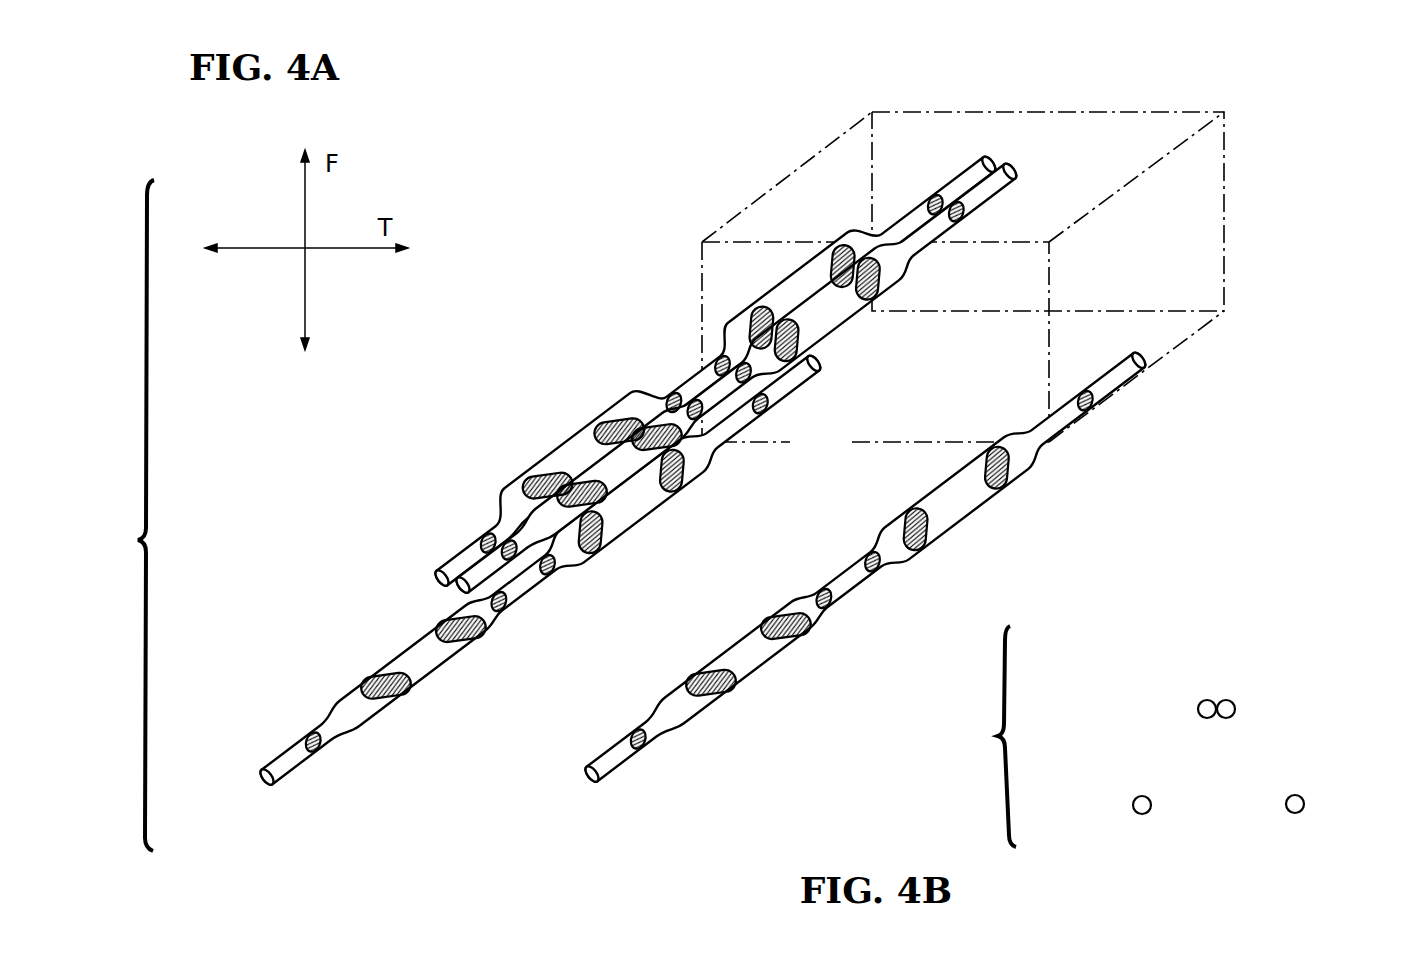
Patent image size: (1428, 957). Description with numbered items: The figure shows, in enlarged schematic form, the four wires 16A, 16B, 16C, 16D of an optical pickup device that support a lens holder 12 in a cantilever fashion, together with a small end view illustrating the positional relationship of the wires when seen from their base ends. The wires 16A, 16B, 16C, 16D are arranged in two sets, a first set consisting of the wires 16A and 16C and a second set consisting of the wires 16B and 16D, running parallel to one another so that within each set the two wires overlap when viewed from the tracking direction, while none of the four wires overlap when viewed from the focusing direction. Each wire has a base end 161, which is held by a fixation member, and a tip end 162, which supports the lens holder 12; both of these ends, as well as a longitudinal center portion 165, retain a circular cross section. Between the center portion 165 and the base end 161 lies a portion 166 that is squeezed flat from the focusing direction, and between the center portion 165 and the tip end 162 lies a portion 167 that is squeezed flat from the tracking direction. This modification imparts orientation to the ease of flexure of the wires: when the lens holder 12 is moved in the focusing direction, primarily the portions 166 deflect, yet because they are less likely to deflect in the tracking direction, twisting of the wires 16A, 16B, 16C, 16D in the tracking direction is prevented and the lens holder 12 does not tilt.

In FIG. 4A, the lens holder 12 is at (1230, 186).
In FIG. 4A, the wire 16A is at (702, 369).
In FIG. 4B, the wire 16A is at (1203, 701).
In FIG. 4A, the wire 16B is at (404, 666).
In FIG. 4B, the wire 16B is at (1134, 797).
In FIG. 4A, the wire 16C is at (818, 328).
In FIG. 4B, the wire 16C is at (1237, 699).
In FIG. 4A, the wire 16D is at (749, 626).
In FIG. 4B, the wire 16D is at (1303, 795).
In FIG. 4A, the base end 161 is at (502, 654).
In FIG. 4A, the tip end 162 is at (971, 317).
In FIG. 4A, the longitudinal center portion 165 is at (731, 483).
In FIG. 4A, the portion extending from the center portion to the base end 166 is at (604, 579).
In FIG. 4A, the portion extending from the center portion to the tip end 167 is at (827, 399).